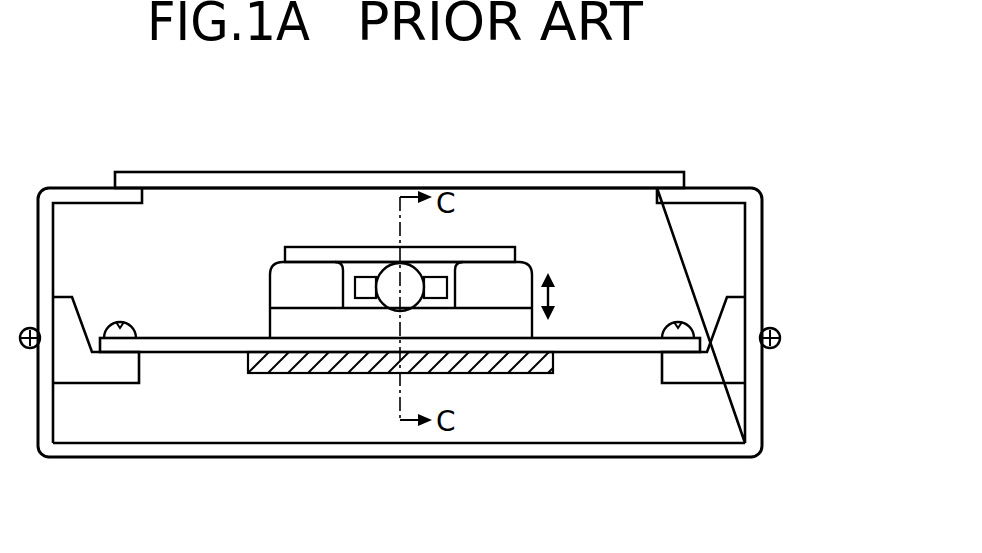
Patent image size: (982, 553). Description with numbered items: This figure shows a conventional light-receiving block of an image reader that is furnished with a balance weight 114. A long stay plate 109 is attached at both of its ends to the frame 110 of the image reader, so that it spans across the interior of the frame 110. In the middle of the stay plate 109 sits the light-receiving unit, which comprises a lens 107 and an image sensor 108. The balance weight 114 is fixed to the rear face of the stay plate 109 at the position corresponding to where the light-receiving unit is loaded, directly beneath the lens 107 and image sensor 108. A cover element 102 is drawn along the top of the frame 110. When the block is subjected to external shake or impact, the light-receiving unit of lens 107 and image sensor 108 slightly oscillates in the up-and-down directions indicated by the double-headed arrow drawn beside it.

The cover plate 102 is at (492, 171).
The lens 107 is at (420, 265).
The image sensor 108 is at (370, 278).
The stay plate 109 is at (632, 336).
The frame 110 is at (762, 255).
The balance weight 114 is at (497, 373).